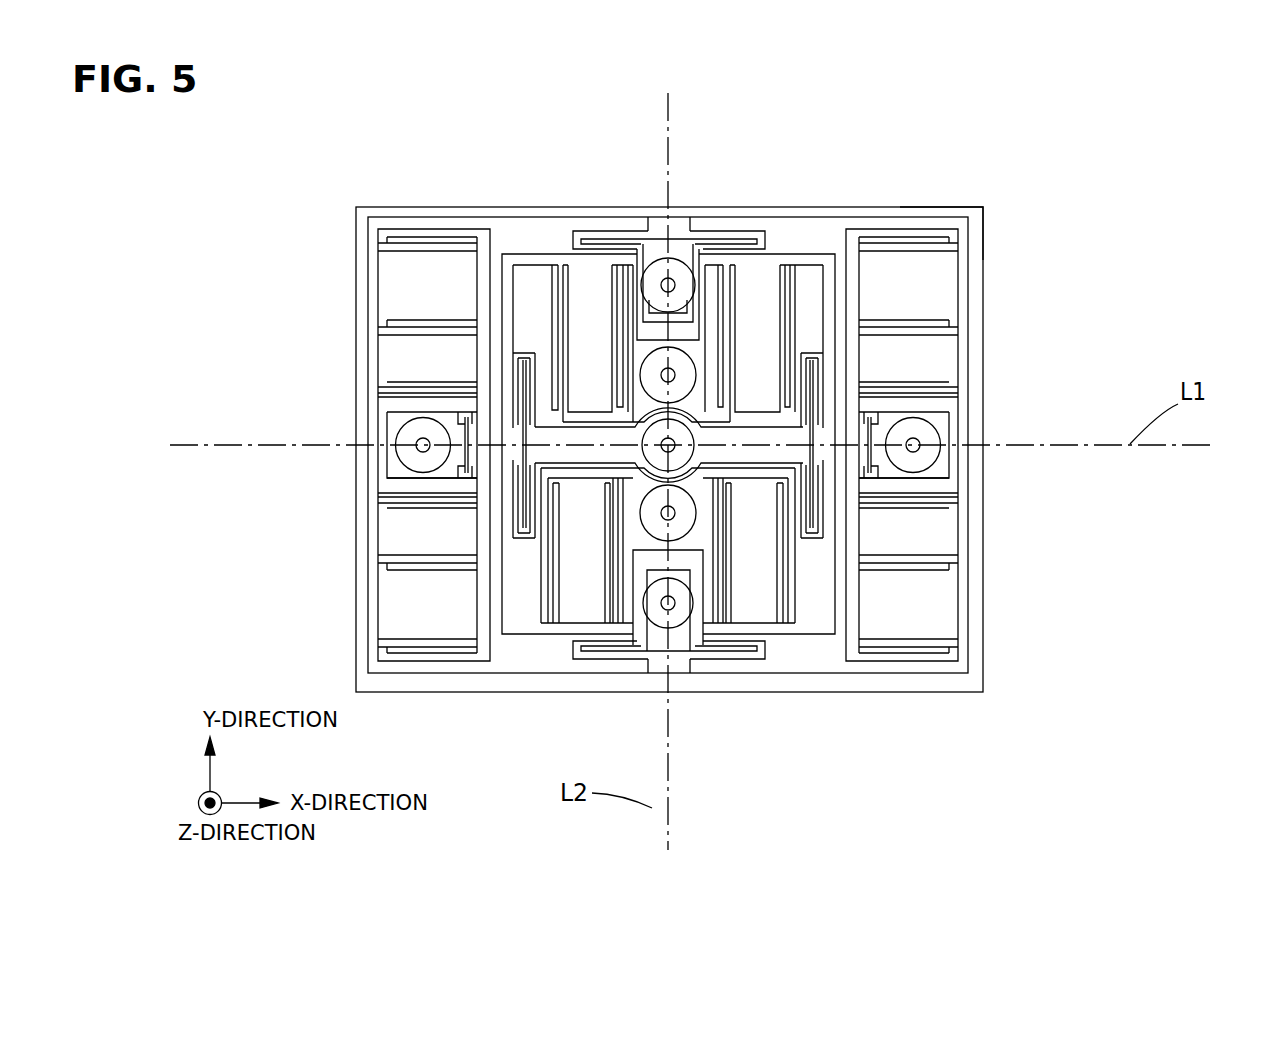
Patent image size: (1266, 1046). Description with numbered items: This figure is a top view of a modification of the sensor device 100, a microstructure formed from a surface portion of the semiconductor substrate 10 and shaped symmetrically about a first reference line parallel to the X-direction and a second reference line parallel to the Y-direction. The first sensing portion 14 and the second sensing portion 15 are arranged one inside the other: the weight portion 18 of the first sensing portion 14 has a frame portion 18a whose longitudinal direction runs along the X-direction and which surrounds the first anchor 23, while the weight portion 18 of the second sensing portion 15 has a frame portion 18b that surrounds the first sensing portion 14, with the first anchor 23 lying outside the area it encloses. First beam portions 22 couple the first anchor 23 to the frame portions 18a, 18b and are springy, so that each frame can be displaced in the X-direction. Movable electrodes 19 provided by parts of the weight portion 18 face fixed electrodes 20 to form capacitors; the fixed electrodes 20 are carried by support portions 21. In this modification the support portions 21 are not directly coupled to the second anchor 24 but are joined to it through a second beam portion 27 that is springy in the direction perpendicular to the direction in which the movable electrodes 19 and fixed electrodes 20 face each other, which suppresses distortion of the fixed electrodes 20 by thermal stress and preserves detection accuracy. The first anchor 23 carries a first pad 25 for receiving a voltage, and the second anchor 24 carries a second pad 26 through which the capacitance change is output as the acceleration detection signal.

The sensor device 100 is at (1245, 129).
The semiconductor substrate 10 is at (955, 207).
The first sensing portion 14 is at (814, 256).
The second sensing portion 15 is at (903, 212).
The weight portion 18 is at (832, 240).
The frame portion 18a is at (533, 265).
The frame portion 18b is at (485, 223).
The movable electrode 19 is at (398, 250).
The fixed electrode 20 is at (443, 238).
The support portion 21 is at (779, 300).
The first beam portion 22 is at (750, 242).
The first anchor 23 is at (597, 430).
The second anchor 24 is at (938, 427).
The first pad 25 is at (673, 285).
The second pad 26 is at (918, 457).
The second beam portion 27 is at (882, 470).